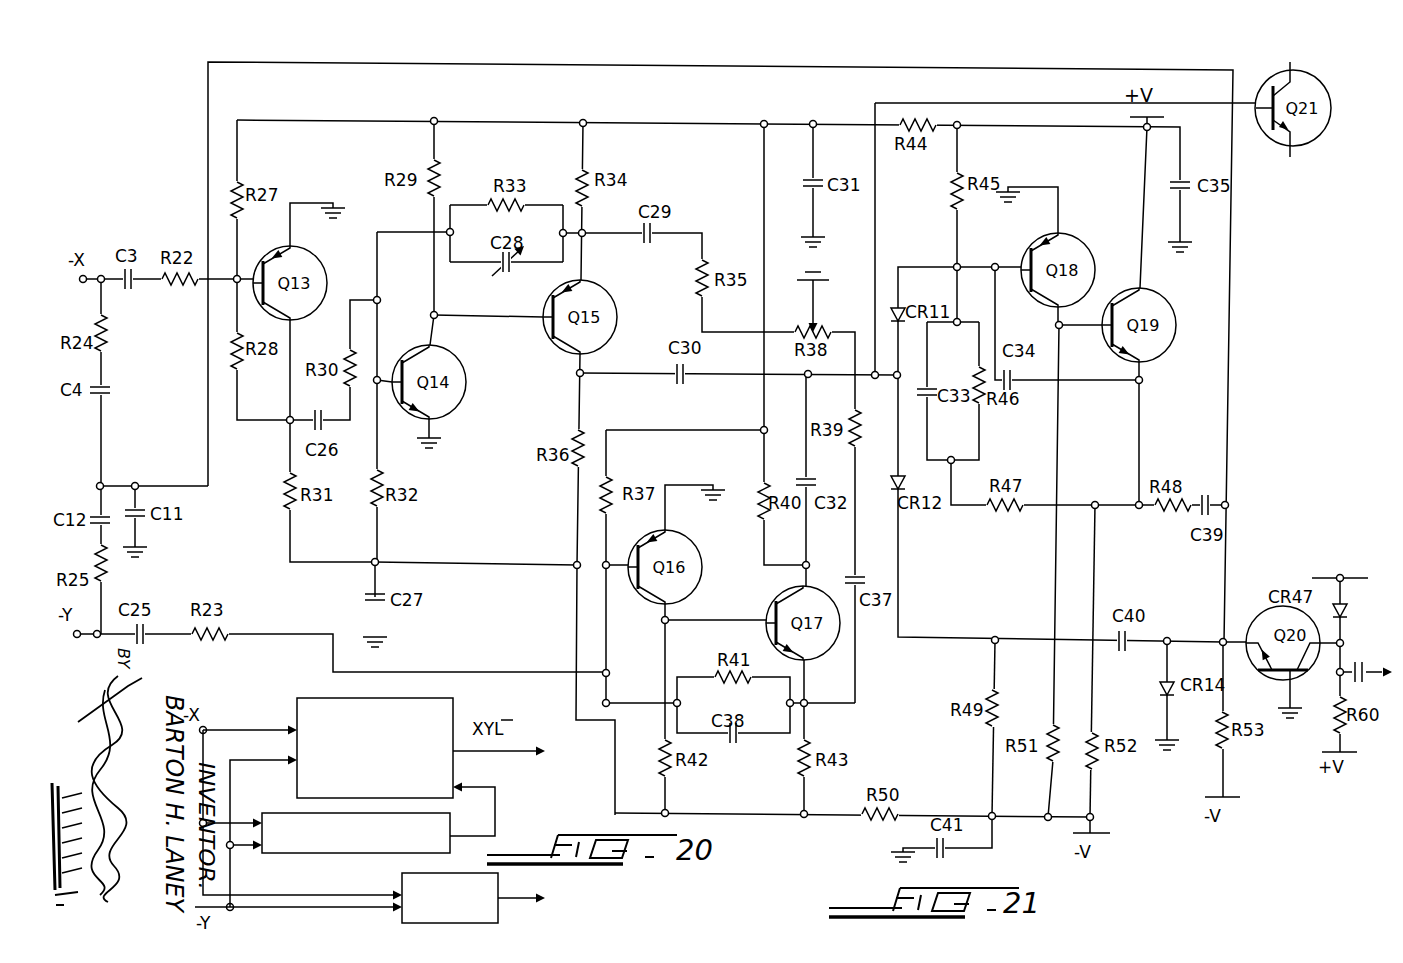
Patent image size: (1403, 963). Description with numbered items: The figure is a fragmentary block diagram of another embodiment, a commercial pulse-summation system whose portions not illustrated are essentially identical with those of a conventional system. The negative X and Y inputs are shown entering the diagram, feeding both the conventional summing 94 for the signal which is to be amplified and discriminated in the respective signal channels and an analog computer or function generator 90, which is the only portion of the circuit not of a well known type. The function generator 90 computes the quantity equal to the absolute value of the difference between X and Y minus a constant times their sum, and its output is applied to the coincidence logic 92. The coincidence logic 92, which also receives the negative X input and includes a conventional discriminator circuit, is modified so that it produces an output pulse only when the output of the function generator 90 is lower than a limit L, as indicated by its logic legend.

The function generator 90 is at (298, 866).
The coincidence logic 92 is at (358, 790).
The summing 94 is at (484, 897).